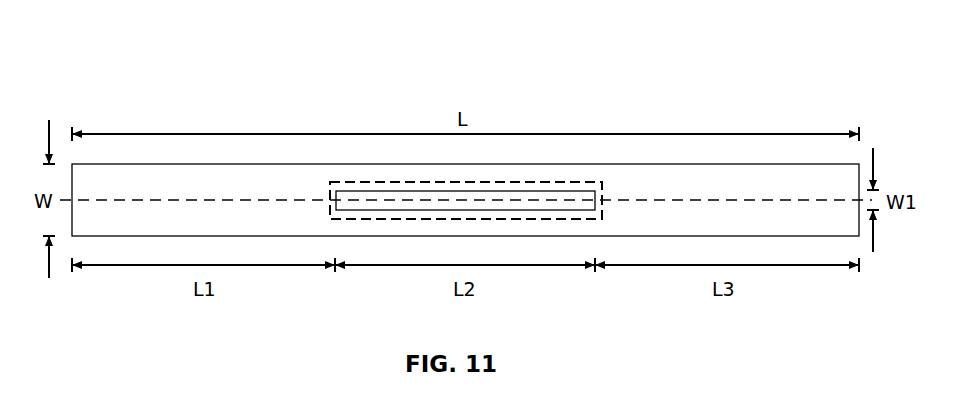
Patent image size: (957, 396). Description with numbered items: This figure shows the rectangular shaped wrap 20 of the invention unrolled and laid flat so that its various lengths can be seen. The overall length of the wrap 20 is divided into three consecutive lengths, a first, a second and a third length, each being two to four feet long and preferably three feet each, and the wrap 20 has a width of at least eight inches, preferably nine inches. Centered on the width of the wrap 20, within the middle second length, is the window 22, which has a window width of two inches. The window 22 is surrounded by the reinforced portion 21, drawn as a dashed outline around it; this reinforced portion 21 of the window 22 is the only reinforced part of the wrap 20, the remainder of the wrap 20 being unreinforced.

The wrap 20 is at (113, 182).
The reinforced portion 21 is at (342, 183).
The window 22 is at (559, 197).